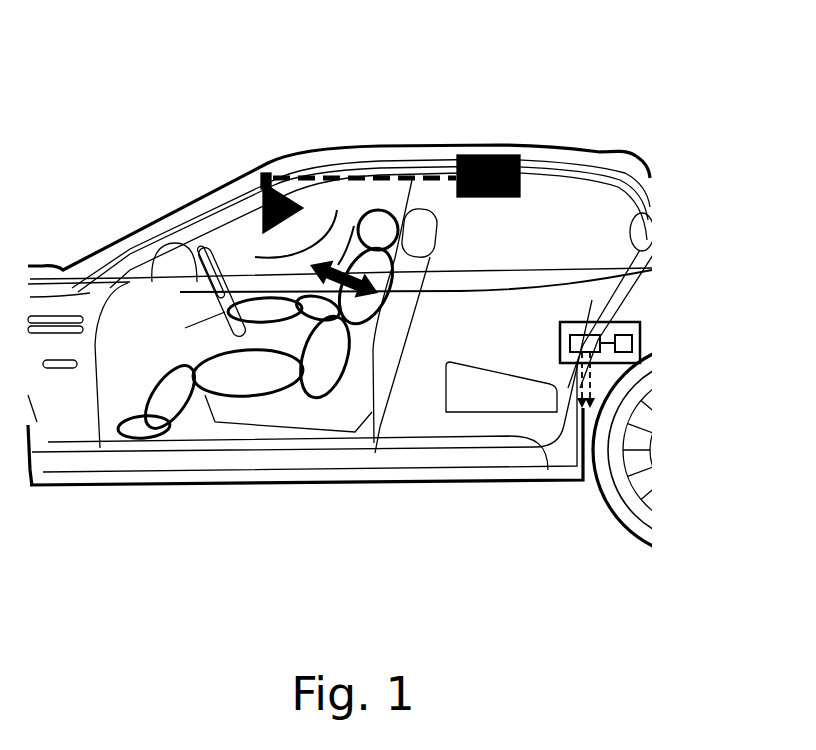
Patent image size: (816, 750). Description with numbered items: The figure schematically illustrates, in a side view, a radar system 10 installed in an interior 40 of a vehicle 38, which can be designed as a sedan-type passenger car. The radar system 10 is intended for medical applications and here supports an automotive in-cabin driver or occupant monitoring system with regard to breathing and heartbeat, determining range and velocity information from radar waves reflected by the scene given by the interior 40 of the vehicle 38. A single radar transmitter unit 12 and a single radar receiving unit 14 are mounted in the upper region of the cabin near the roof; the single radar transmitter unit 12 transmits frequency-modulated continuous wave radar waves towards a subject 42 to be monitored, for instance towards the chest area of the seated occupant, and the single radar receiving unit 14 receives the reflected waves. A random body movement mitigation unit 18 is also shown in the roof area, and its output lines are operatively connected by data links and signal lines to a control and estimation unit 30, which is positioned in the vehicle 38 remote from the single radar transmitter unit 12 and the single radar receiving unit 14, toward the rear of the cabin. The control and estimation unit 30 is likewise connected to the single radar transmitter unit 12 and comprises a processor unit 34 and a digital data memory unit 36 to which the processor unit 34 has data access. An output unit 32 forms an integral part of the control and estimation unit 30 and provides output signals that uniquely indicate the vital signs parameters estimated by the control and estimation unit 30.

The radar system 10 is at (264, 93).
The single radar transmitter unit 12 is at (190, 189).
The single radar receiving unit 14 is at (242, 206).
The random body movement mitigation unit 18 is at (487, 148).
The control and estimation unit 30 is at (671, 291).
The output unit 32 is at (676, 263).
The processor unit 34 is at (623, 340).
The digital data memory unit 36 is at (590, 338).
The vehicle 38 is at (568, 176).
The interior 40 is at (525, 247).
The subject 42 is at (330, 357).